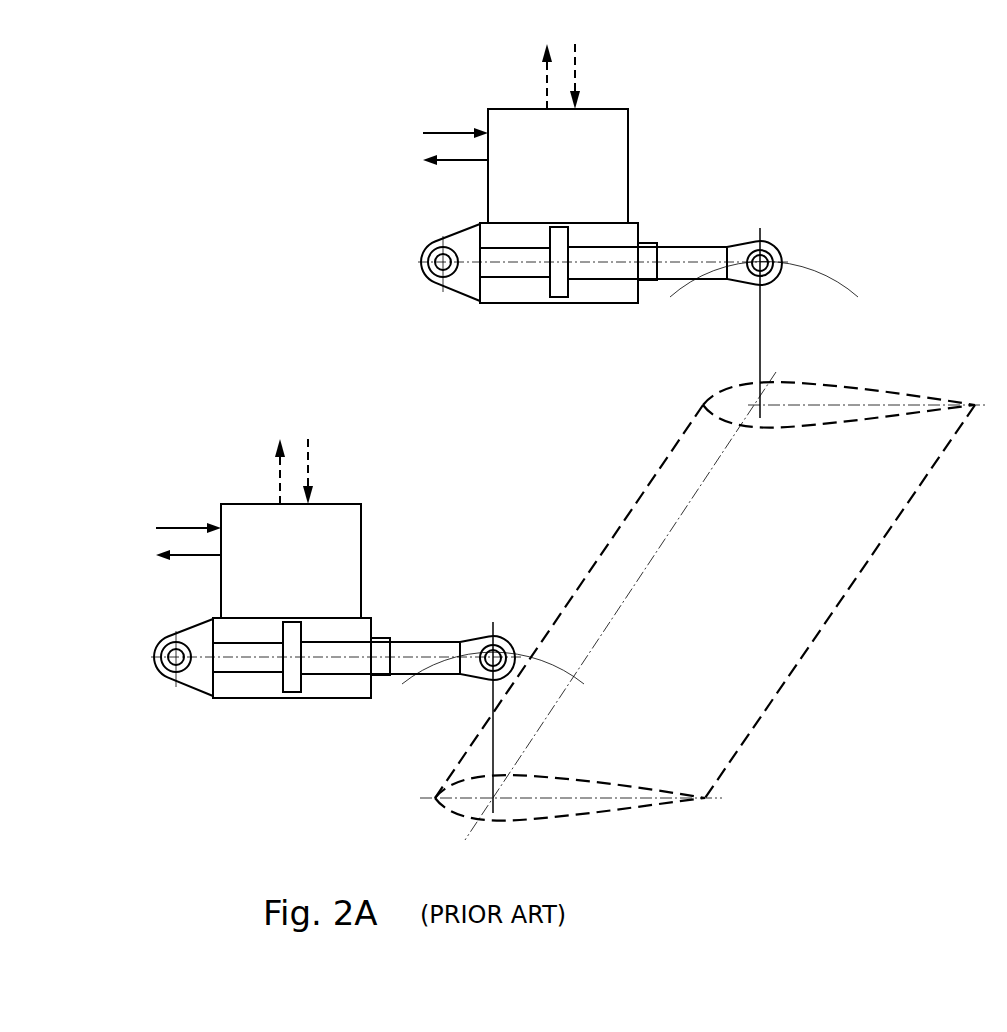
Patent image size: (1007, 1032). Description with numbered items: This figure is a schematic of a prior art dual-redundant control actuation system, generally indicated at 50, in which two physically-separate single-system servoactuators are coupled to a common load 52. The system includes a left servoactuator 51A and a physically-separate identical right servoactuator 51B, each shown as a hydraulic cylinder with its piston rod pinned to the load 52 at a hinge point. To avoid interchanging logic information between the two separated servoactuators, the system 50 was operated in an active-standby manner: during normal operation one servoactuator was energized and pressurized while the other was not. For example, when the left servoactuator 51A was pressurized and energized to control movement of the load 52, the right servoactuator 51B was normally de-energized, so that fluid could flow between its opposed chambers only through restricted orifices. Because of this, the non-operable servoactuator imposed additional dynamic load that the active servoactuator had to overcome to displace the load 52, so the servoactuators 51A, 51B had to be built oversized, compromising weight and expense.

The redundant control actuation system 50 is at (205, 285).
The left servoactuator 51A is at (319, 568).
The right servoactuator 51B is at (580, 176).
The load 52 is at (625, 560).